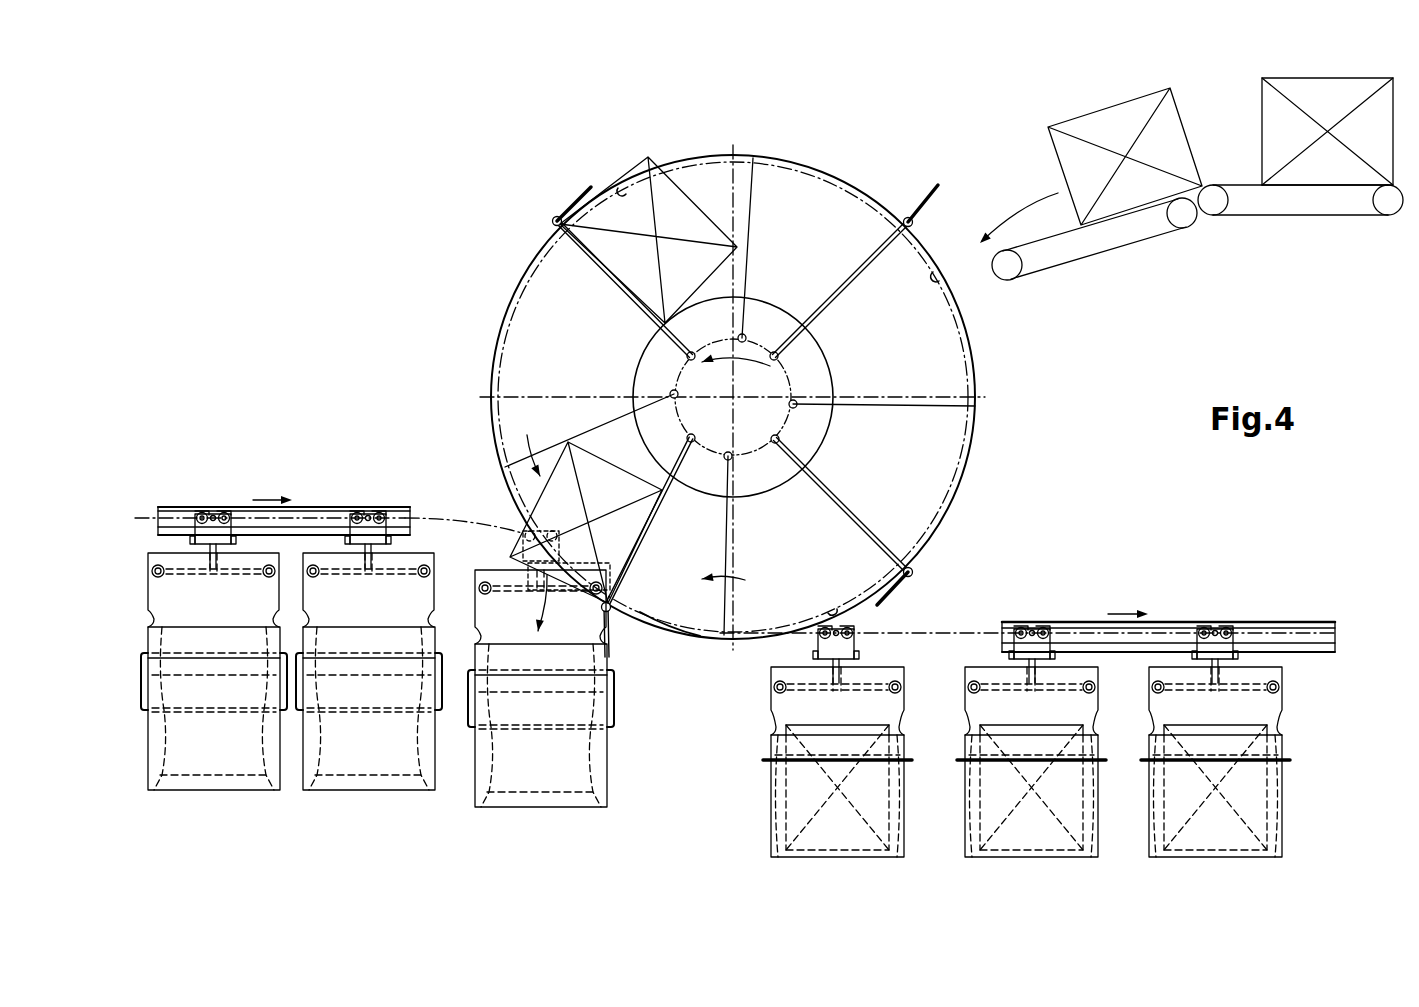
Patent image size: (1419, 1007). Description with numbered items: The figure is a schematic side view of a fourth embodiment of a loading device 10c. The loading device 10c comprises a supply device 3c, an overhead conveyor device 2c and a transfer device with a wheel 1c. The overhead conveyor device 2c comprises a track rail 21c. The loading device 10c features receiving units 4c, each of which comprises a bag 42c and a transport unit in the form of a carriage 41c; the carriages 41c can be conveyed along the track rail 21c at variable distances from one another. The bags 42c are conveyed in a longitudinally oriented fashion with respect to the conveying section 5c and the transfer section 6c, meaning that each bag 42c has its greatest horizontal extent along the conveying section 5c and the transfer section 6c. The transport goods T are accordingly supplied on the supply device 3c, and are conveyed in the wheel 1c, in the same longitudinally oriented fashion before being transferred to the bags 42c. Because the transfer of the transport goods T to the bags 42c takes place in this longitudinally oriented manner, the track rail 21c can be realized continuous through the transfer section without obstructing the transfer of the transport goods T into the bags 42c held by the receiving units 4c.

The wheel 1c is at (725, 439).
The overhead conveyor device 2c is at (322, 478).
The supply device 3c is at (1190, 196).
The receiving unit 4c is at (206, 707).
The conveying section 5c is at (322, 491).
The transfer section 6c is at (670, 625).
The loading device 10c is at (457, 338).
The track rail 21c is at (190, 530).
The carriage 41c is at (222, 532).
The bag 42c is at (130, 678).
The transport goods T is at (1115, 125).